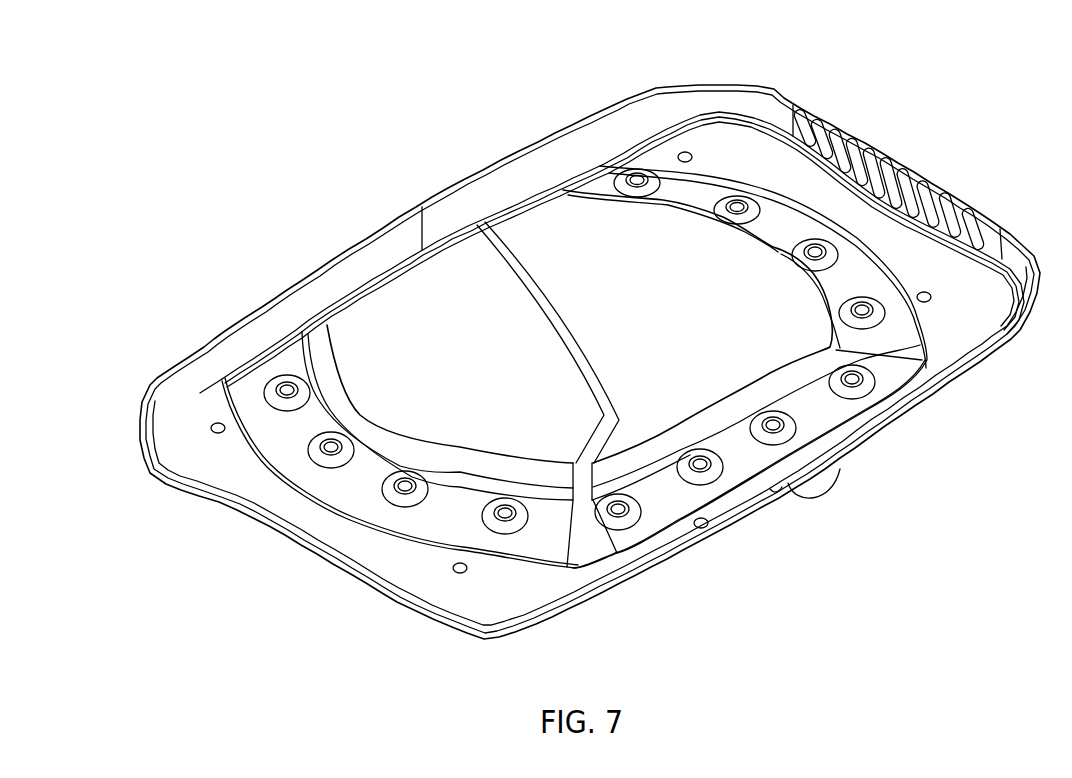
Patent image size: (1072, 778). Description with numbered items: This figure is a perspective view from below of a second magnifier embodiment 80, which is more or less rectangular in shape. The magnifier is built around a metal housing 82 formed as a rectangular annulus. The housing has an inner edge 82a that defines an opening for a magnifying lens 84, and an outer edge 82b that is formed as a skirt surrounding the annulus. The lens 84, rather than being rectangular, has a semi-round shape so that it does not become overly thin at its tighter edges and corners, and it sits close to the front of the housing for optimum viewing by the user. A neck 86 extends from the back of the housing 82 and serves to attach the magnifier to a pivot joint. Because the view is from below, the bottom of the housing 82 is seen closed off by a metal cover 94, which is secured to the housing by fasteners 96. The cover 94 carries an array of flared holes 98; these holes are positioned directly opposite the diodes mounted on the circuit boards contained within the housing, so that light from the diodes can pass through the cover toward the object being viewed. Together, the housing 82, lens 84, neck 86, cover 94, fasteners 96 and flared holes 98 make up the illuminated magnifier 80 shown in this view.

The second magnifier embodiment 80 is at (283, 188).
The metal housing 82 is at (697, 86).
The inner edge 82a is at (398, 427).
The outer edge 82b is at (590, 145).
The magnifying lens 84 is at (713, 322).
The neck 86 is at (837, 473).
The metal cover 94 is at (440, 590).
The fasteners 96 is at (207, 428).
The flared holes 98 is at (405, 489).